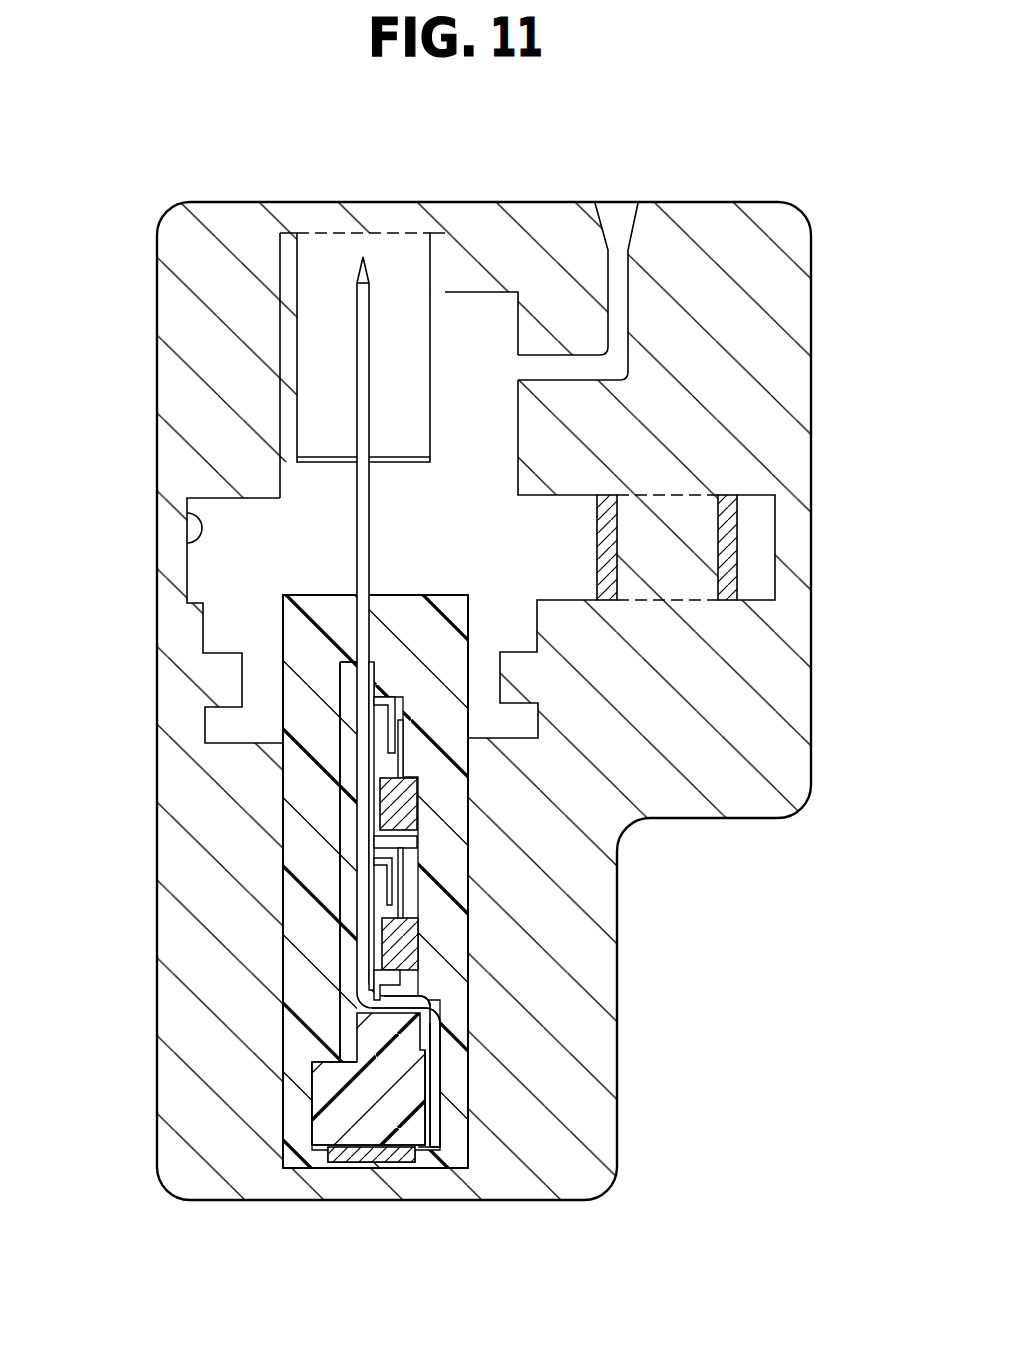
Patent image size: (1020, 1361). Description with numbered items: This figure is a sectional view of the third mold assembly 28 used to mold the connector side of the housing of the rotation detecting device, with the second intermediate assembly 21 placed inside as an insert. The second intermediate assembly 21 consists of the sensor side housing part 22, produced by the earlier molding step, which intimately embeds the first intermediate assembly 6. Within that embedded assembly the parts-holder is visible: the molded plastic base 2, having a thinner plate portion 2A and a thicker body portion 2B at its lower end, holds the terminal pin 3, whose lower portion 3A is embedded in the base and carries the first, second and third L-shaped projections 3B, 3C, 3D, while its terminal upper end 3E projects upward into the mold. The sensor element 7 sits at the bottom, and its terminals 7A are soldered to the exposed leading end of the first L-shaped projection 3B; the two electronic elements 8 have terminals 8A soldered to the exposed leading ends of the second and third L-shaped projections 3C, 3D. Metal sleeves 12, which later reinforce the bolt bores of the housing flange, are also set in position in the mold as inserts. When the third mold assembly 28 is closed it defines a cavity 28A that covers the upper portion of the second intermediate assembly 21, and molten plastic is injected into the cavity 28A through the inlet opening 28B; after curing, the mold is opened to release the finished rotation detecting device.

The third mold assembly 28 is at (772, 202).
The cavity 28A is at (187, 522).
The inlet opening 28B is at (607, 215).
The metal sleeve 12 is at (727, 530).
The terminal upper end 3E is at (360, 363).
The terminal pin 3 is at (355, 482).
The lower portion 3A is at (373, 955).
The first L-shaped projection 3B is at (440, 1005).
The second L-shaped projection 3C is at (372, 865).
The third L-shaped projection 3D is at (394, 738).
The second intermediate assembly 21 is at (278, 596).
The sensor side housing part 22 is at (310, 637).
The first intermediate assembly 6 is at (330, 796).
The molded plastic base 2 is at (350, 1010).
The thinner plate portion 2A is at (350, 836).
The thicker body portion 2B is at (323, 1123).
The electronic element 8 is at (418, 806).
The terminal 8A is at (403, 897).
The sensor element 7 is at (363, 1162).
The terminal 7A is at (440, 1097).